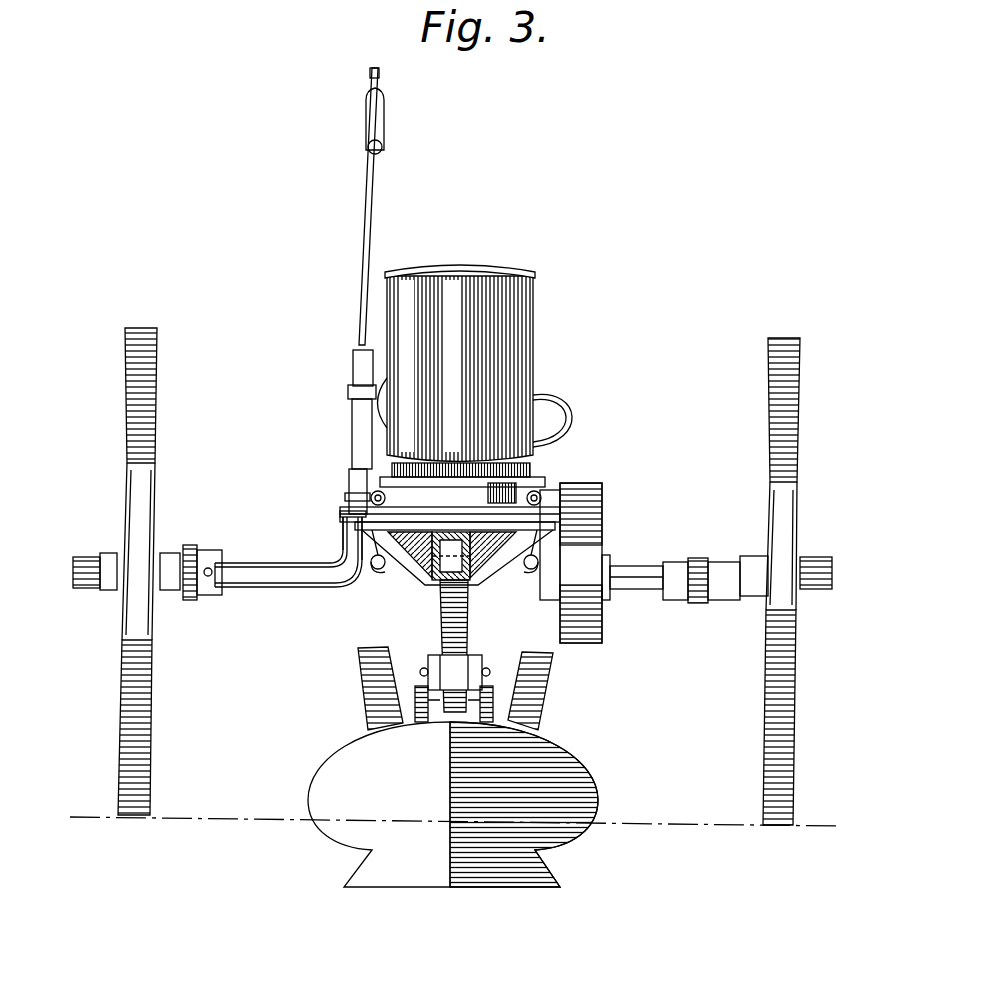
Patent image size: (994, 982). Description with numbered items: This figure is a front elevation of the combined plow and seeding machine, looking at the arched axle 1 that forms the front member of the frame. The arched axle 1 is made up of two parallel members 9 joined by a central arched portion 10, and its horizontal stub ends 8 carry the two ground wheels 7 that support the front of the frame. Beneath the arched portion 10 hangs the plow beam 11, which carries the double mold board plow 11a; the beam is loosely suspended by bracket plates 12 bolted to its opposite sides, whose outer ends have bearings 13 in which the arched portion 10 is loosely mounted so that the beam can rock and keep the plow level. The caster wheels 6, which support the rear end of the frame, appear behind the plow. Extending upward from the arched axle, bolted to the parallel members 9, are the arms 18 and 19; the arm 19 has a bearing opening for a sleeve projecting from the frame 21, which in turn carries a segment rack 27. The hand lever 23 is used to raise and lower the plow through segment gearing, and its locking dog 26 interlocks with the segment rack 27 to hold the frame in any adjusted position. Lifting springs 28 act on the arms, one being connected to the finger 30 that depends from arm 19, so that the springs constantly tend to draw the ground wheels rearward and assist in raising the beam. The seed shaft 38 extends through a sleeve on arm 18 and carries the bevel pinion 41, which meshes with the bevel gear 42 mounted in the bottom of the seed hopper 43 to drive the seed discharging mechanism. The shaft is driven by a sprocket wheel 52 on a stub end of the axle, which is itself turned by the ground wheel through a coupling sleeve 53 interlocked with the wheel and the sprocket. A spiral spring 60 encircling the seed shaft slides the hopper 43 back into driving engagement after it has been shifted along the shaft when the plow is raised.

The arched axle 1 is at (345, 588).
The caster wheels 6 is at (360, 690).
The ground wheels 7 is at (459, 564).
The horizontal stub ends 8 is at (265, 563).
The parallel members 9 is at (343, 555).
The arched portion 10 is at (440, 556).
The plow beam 11 is at (468, 632).
The double mold board plow 11a is at (453, 804).
The bracket plates 12 is at (428, 582).
The bearings 13 is at (370, 492).
The arm 18 is at (558, 495).
The arm 19 is at (346, 496).
The frame 21 is at (350, 483).
The hand lever 23 is at (376, 206).
The locking dog 26 is at (354, 380).
The segment rack 27 is at (352, 428).
The lifting springs 28 is at (380, 570).
The finger 30 is at (374, 573).
The seed shaft 38 is at (445, 477).
The bevel pinion 41 is at (450, 523).
The bevel gear 42 is at (555, 440).
The seed hopper 43 is at (460, 268).
The sprocket wheel 52 is at (612, 566).
The coupling sleeve 53 is at (690, 564).
The spiral spring 60 is at (540, 480).